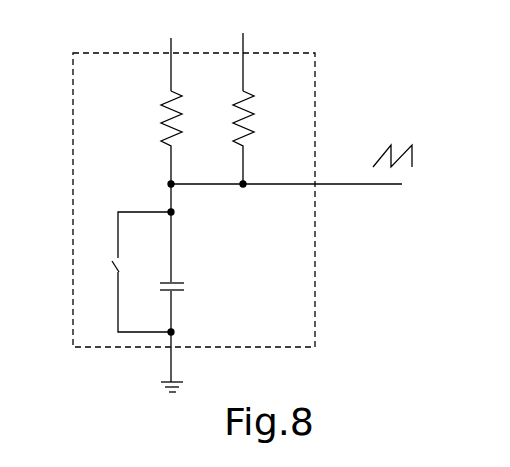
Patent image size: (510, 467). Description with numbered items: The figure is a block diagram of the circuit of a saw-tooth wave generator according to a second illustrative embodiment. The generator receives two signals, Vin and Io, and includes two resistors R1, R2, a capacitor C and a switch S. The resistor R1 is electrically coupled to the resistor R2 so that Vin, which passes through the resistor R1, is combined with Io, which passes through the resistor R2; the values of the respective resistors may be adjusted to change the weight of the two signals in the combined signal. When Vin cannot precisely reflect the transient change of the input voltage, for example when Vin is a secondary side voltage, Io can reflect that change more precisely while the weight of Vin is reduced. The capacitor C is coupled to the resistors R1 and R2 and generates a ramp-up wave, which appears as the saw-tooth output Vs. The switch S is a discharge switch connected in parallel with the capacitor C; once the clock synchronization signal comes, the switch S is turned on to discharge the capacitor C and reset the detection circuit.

The input voltage signal Vin is at (172, 50).
The output current signal Io is at (244, 52).
The resistor R1 is at (158, 137).
The resistor R2 is at (230, 137).
The saw-tooth wave output Vs is at (302, 169).
The capacitor C is at (181, 288).
The switch S is at (132, 272).